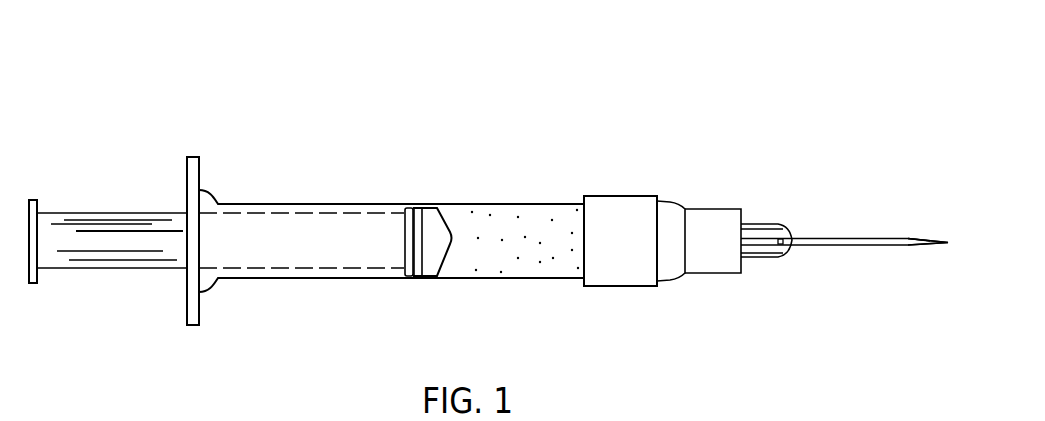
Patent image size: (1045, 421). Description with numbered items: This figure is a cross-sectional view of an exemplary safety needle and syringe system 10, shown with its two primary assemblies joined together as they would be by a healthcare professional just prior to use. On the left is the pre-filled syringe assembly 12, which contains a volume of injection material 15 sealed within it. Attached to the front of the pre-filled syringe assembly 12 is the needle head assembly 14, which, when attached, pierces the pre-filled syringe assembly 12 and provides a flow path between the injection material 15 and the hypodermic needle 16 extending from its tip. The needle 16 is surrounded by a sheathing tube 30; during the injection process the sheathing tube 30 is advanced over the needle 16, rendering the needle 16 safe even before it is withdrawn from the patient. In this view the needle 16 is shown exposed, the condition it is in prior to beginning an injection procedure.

The needle and syringe system 10 is at (125, 68).
The pre-filled syringe assembly 12 is at (35, 158).
The needle head assembly 14 is at (855, 152).
The injection material 15 is at (522, 267).
The hypodermic needle 16 is at (930, 237).
The sheathing tube 30 is at (823, 243).